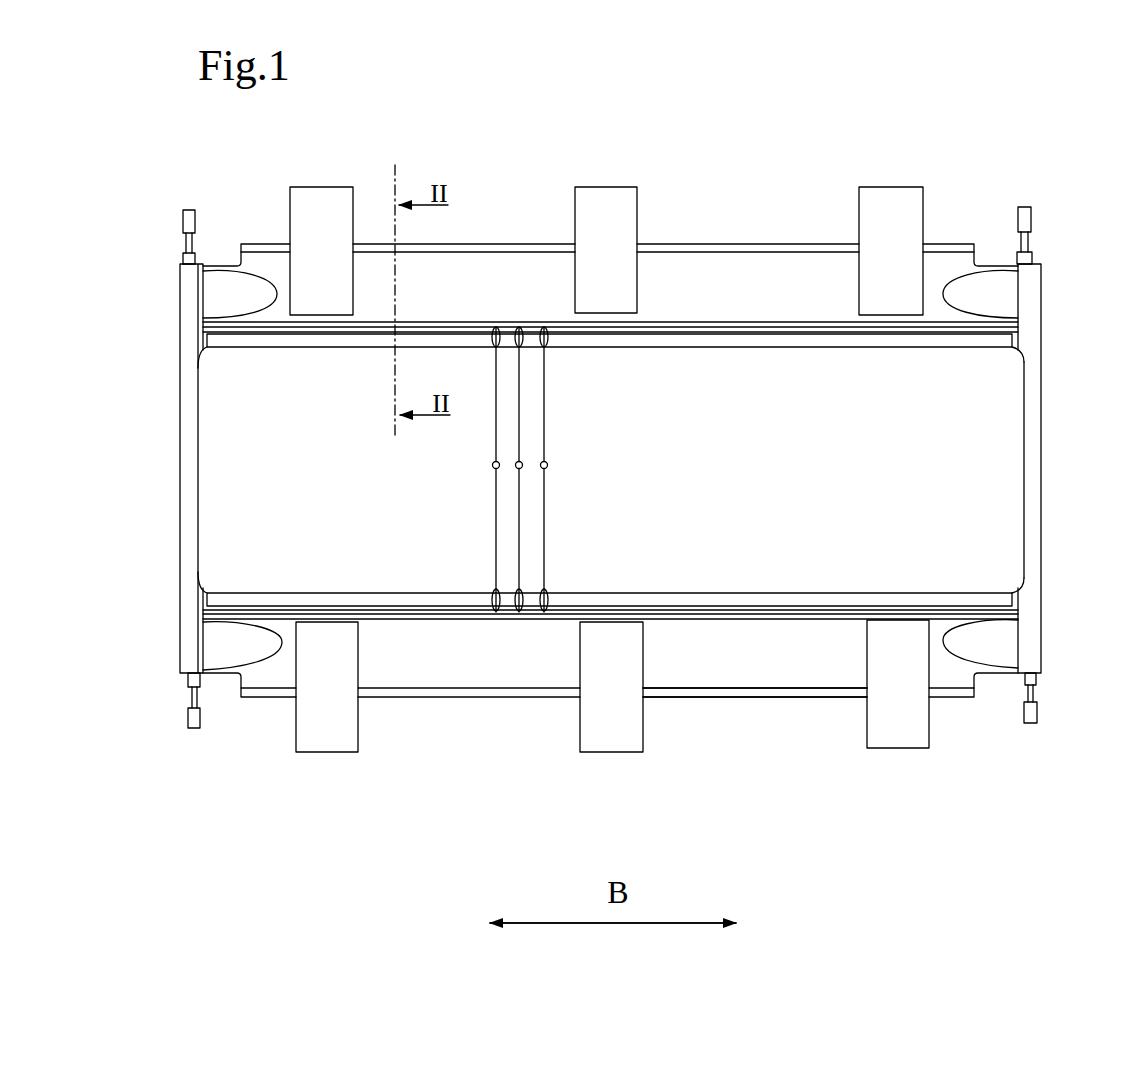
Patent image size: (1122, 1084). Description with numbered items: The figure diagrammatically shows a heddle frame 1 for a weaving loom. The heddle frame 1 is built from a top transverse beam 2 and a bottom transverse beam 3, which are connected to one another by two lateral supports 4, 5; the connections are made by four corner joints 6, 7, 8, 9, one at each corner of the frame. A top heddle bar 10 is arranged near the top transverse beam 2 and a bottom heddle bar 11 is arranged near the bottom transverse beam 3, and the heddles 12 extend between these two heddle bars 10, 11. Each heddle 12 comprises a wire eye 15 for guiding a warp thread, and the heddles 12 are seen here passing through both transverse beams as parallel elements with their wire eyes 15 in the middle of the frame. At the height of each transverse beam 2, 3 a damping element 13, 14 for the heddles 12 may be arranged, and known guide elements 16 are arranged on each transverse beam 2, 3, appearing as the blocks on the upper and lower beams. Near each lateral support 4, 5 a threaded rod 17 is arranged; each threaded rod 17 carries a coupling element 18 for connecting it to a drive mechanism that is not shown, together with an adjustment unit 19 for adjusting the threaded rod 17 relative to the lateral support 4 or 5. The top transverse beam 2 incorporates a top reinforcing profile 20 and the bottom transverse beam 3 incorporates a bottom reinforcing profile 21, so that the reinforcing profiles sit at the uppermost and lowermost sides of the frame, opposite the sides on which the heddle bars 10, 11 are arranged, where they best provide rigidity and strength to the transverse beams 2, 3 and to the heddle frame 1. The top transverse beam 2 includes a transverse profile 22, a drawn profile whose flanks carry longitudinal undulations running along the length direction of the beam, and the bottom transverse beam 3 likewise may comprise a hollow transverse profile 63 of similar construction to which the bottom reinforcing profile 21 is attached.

The heddle frame 1 is at (735, 153).
The top transverse beam 2 is at (743, 278).
The bottom transverse beam 3 is at (737, 662).
The lateral support 4 is at (180, 455).
The lateral support 5 is at (1030, 480).
The corner joint 6 is at (250, 295).
The corner joint 7 is at (248, 653).
The corner joint 8 is at (988, 287).
The corner joint 9 is at (990, 648).
The top heddle bar 10 is at (627, 338).
The bottom heddle bar 11 is at (568, 600).
The heddle 12 is at (545, 410).
The damping element 13 is at (312, 323).
The damping element 14 is at (805, 600).
The wire eye 15 is at (548, 465).
The guide element 16 is at (317, 230).
The threaded rod 17 is at (190, 700).
The coupling element 18 is at (188, 727).
The adjustment unit 19 is at (183, 219).
The top reinforcing profile 20 is at (475, 244).
The bottom reinforcing profile 21 is at (470, 690).
The transverse profile 22 is at (772, 295).
The hollow transverse profile 63 is at (800, 660).